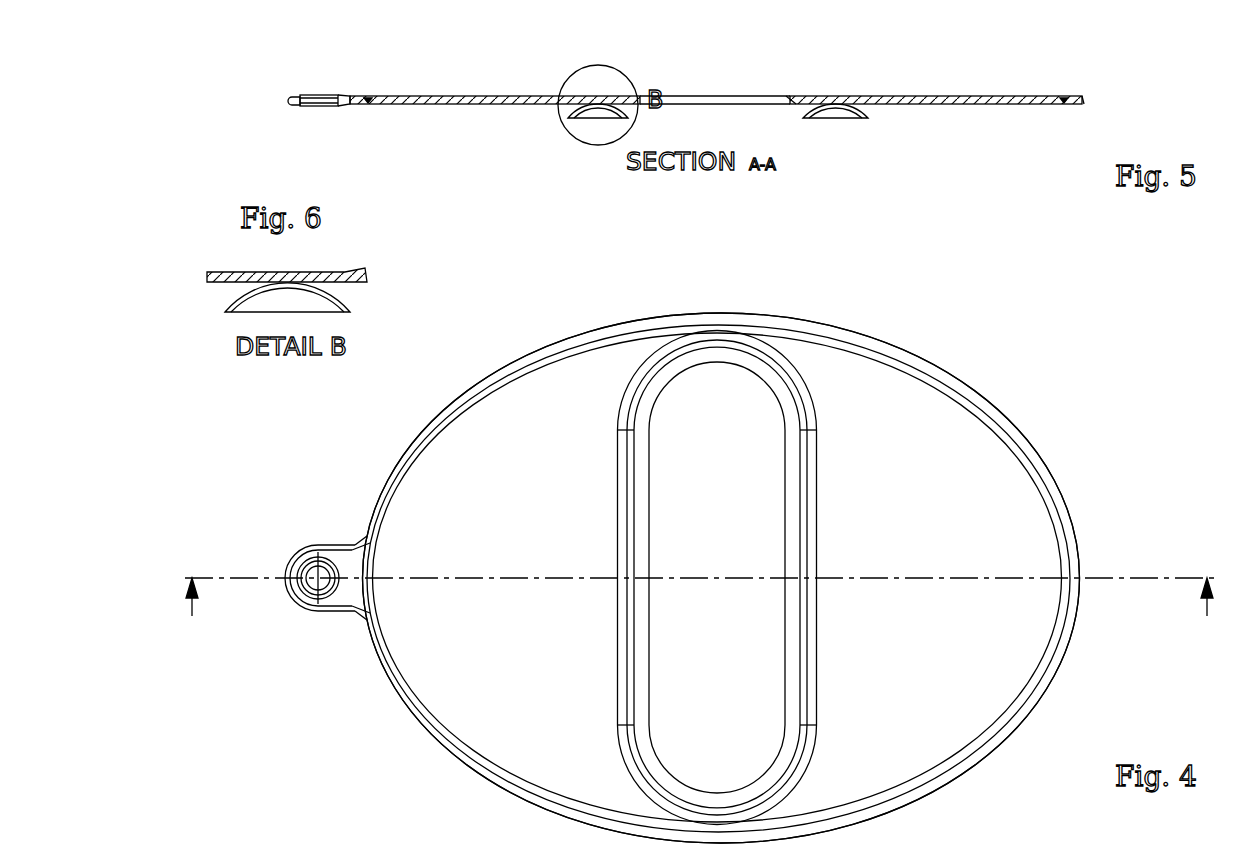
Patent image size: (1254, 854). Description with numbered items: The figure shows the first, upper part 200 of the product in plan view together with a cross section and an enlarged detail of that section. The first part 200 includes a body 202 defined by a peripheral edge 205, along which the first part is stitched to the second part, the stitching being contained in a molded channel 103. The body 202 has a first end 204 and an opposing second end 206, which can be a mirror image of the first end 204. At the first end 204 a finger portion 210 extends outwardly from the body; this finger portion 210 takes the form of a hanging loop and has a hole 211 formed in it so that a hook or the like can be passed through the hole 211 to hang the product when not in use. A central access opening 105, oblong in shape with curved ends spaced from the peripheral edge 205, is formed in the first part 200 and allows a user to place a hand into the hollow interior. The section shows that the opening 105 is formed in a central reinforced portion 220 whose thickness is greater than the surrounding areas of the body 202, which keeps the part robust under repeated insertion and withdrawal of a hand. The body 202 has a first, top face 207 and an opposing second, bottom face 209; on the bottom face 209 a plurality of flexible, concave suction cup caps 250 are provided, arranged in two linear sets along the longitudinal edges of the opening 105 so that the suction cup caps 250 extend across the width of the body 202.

In FIG. 4, the molded channel 103 is at (478, 757).
In FIG. 4, the central access opening 105 is at (717, 415).
In FIG. 5, the central access opening 105 is at (760, 96).
In FIG. 4, the first part 200 is at (913, 325).
In FIG. 4, the body 202 is at (933, 477).
In FIG. 5, the body 202 is at (995, 96).
In FIG. 6, the body 202 is at (229, 271).
In FIG. 4, the first end 204 is at (354, 540).
In FIG. 4, the peripheral edge 205 is at (405, 438).
In FIG. 5, the peripheral edge 205 is at (1085, 101).
In FIG. 4, the second end 206 is at (1148, 578).
In FIG. 5, the first (top) face 207 is at (381, 96).
In FIG. 5, the second (bottom) face 209 is at (417, 104).
In FIG. 4, the finger portion 210 is at (298, 602).
In FIG. 4, the hole 211 is at (313, 577).
In FIG. 5, the central reinforced portion 220 is at (793, 97).
In FIG. 5, the suction cup caps 250 is at (572, 121).
In FIG. 6, the suction cup caps 250 is at (243, 307).